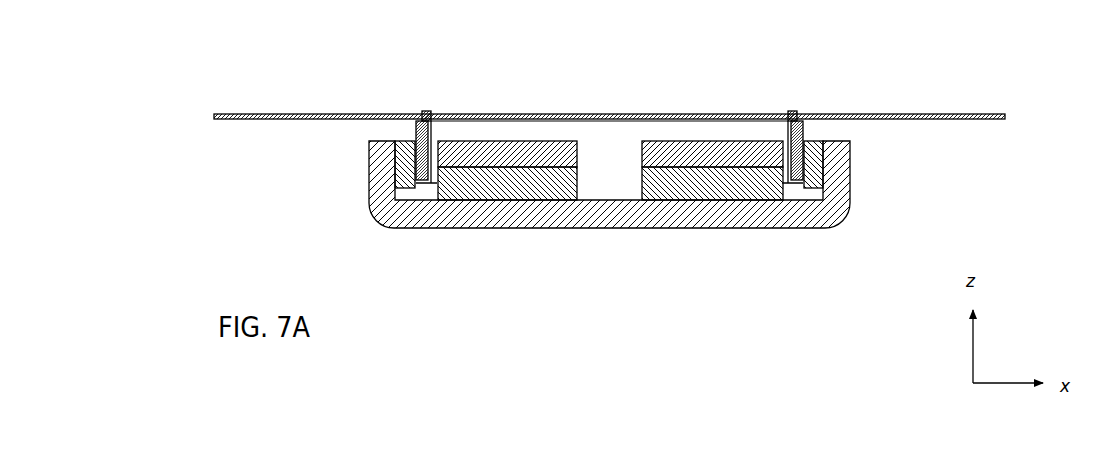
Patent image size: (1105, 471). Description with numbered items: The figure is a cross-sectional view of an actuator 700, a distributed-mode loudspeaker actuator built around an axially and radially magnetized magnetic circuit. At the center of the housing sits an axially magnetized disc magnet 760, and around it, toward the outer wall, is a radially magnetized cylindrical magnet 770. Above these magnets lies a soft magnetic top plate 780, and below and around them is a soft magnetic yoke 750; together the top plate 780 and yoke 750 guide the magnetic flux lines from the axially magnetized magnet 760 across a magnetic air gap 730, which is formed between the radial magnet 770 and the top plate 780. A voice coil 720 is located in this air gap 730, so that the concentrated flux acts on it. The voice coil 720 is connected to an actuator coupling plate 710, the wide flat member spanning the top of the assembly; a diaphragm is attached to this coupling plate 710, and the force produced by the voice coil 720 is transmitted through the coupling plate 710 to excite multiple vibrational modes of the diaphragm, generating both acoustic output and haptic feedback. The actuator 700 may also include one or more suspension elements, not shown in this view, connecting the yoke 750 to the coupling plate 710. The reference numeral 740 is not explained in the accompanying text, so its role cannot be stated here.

The actuator 700 is at (117, 98).
The actuator coupling plate 710 is at (340, 112).
The voice coil 720 is at (445, 122).
The magnetic air gap 730 is at (369, 200).
The left flexure bracket 740 is at (412, 188).
The soft magnetic yoke 750 is at (488, 208).
The axially magnetized disc magnet 760 is at (532, 185).
The radially magnetized cylindrical magnet 770 is at (815, 190).
The soft magnetic top plate 780 is at (678, 147).